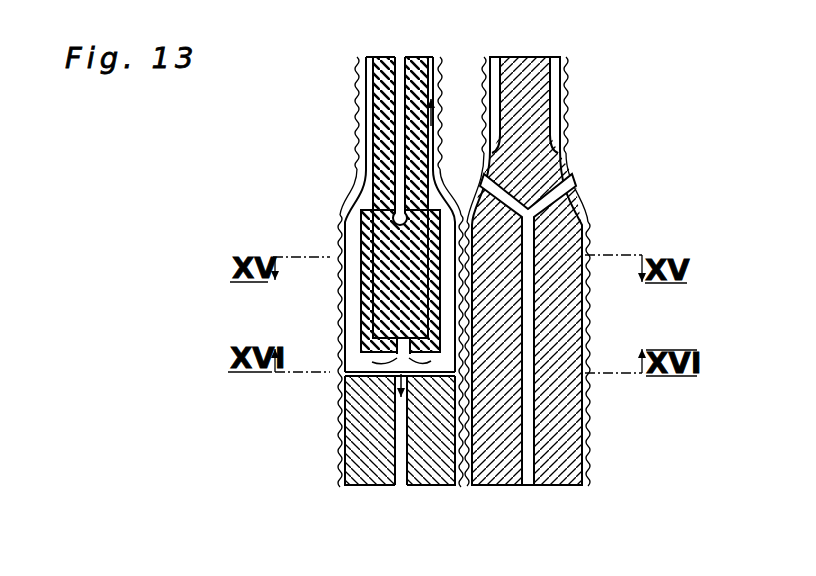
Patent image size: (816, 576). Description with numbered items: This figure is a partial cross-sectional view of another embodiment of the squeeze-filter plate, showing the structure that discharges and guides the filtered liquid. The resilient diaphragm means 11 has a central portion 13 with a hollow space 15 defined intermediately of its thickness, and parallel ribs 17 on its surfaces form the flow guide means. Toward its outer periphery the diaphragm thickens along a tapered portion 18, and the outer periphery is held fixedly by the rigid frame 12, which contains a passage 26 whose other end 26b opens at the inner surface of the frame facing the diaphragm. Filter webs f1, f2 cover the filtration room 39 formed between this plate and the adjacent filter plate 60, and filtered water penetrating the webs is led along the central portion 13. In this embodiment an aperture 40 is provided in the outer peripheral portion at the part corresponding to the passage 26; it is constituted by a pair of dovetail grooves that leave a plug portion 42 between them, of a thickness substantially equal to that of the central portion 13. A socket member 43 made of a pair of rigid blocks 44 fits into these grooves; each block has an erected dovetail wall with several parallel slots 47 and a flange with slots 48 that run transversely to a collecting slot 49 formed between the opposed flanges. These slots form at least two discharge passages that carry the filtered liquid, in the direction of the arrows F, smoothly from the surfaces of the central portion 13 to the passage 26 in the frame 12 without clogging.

The diaphragm means 11 is at (435, 56).
The frame 12 is at (366, 458).
The central portion 13 is at (383, 146).
The hollow space 15 is at (399, 70).
The parallel ribs 17 is at (371, 108).
The tapered portion 18 is at (355, 177).
The passage 26 is at (401, 470).
The other end of passage 26b is at (363, 378).
The filtration room 39 is at (466, 137).
The aperture 40 is at (452, 359).
The plug portion 42 is at (400, 293).
The socket member 43 is at (356, 359).
The rigid block 44 is at (362, 258).
The parallel slots 47 is at (346, 287).
The slots 48 is at (437, 364).
The collecting slot 49 is at (396, 357).
The adjacent filter plate 60 is at (530, 88).
The arrow indicating flow direction F is at (353, 243).
The filter web f1 is at (446, 131).
The filter web f2 is at (486, 99).